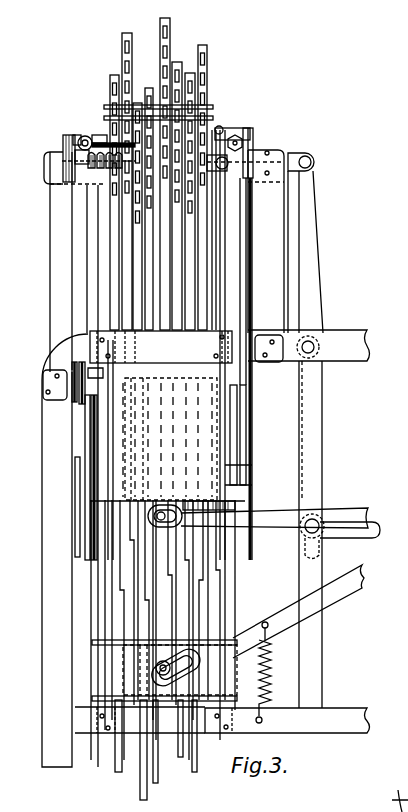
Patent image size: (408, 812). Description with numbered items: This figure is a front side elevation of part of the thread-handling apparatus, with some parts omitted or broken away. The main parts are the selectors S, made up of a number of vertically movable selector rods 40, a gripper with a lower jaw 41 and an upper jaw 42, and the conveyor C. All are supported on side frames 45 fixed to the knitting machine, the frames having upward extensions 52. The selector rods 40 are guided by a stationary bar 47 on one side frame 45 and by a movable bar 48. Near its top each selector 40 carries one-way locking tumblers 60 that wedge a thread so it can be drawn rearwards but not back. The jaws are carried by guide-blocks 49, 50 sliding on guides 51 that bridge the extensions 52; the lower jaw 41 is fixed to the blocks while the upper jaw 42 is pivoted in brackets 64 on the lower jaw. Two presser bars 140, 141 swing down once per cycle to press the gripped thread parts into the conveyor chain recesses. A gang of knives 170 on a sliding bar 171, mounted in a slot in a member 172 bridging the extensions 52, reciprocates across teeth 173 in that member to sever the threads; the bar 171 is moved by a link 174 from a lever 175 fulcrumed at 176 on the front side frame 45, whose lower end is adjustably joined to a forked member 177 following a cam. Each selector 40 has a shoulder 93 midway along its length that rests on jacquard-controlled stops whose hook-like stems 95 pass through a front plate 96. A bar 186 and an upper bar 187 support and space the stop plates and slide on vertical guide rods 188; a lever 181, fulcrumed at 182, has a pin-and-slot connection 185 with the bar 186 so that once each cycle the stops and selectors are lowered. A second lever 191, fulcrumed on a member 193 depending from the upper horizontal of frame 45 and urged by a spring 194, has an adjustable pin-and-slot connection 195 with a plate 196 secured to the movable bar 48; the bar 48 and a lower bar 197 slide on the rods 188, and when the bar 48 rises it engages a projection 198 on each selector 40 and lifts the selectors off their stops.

The selector rod 40 is at (124, 38).
The one-way locking tumbler 60 is at (126, 54).
The conveyor C is at (158, 90).
The selectors S is at (181, 289).
The guides 51 is at (77, 135).
The lower jaw 41 is at (85, 136).
The upper jaw 42 is at (100, 135).
The brackets 64 is at (93, 150).
The guide-block 49 is at (68, 137).
The presser bar 140 is at (213, 106).
The presser bar 141 is at (213, 118).
The guide-block 50 is at (254, 131).
The link 174 is at (296, 158).
The lever 175 is at (313, 187).
The sliding bar 171 is at (92, 170).
The member 172 is at (100, 170).
The knives 170 is at (102, 170).
The teeth 173 is at (118, 170).
The upward extensions 52 is at (78, 459).
The stationary bar 47 is at (214, 330).
The fulcrum 176 is at (310, 345).
The side frames 45 is at (52, 555).
The upper bar 187 is at (86, 345).
The shoulder 93 is at (123, 414).
The hook-like stem 95 is at (123, 435).
The front plate 96 is at (123, 446).
The bar 186 is at (90, 501).
The pin-and-slot connection 185 is at (314, 534).
The lever 181 is at (312, 506).
The fulcrum 182 is at (305, 534).
The forked member 177 is at (354, 537).
The vertical guide rods 188 is at (100, 591).
The projection 198 is at (155, 601).
The movable bar 48 is at (92, 641).
The lever 191 is at (298, 611).
The plate 196 is at (205, 668).
The spring 194 is at (270, 656).
The adjustable pin-and-slot connection 195 is at (176, 672).
The lower bar 197 is at (92, 699).
The member 193 is at (402, 792).